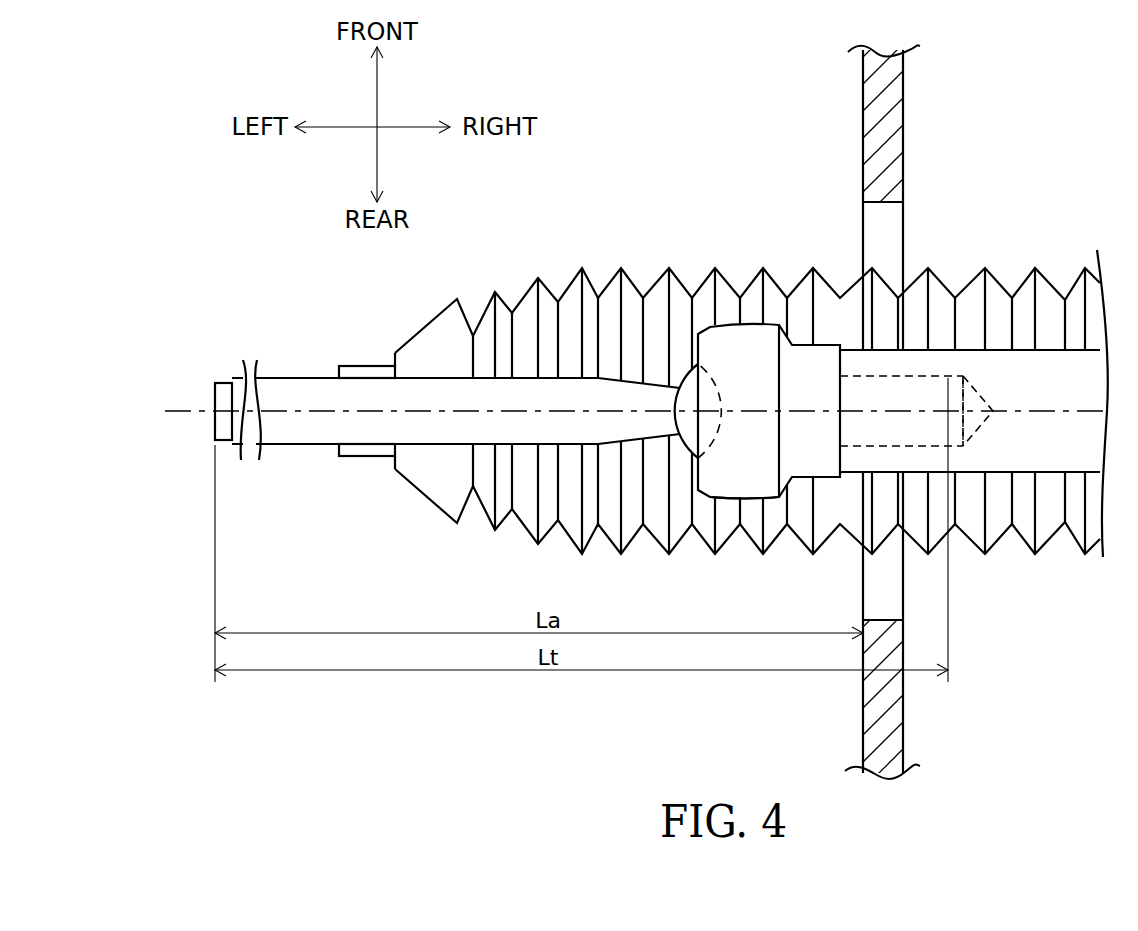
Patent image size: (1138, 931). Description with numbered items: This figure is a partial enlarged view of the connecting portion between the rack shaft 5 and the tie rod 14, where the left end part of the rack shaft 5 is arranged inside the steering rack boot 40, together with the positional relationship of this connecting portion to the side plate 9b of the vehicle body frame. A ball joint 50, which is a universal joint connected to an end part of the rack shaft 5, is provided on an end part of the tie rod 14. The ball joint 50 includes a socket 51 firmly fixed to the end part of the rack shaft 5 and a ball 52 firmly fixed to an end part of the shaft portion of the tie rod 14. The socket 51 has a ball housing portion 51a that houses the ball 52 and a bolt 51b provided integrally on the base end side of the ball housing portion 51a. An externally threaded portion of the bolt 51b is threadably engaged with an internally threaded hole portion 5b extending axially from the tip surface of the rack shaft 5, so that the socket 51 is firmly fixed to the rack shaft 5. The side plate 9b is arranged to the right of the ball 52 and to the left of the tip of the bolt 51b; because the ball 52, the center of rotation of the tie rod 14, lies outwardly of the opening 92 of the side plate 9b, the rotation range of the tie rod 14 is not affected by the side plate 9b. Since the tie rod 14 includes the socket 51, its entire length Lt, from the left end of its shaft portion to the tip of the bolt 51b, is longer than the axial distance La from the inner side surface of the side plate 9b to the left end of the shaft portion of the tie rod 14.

The tie rod 14 is at (328, 388).
The steering rack boot 40 is at (568, 287).
The ball joint 50 is at (827, 400).
The socket 51 is at (762, 338).
The ball housing portion 51a is at (757, 485).
The bolt 51b is at (965, 447).
The ball 52 is at (690, 382).
The rack shaft 5 is at (993, 372).
The hole portion 5b is at (965, 378).
The side plate 9b is at (905, 118).
The opening 92 is at (905, 208).